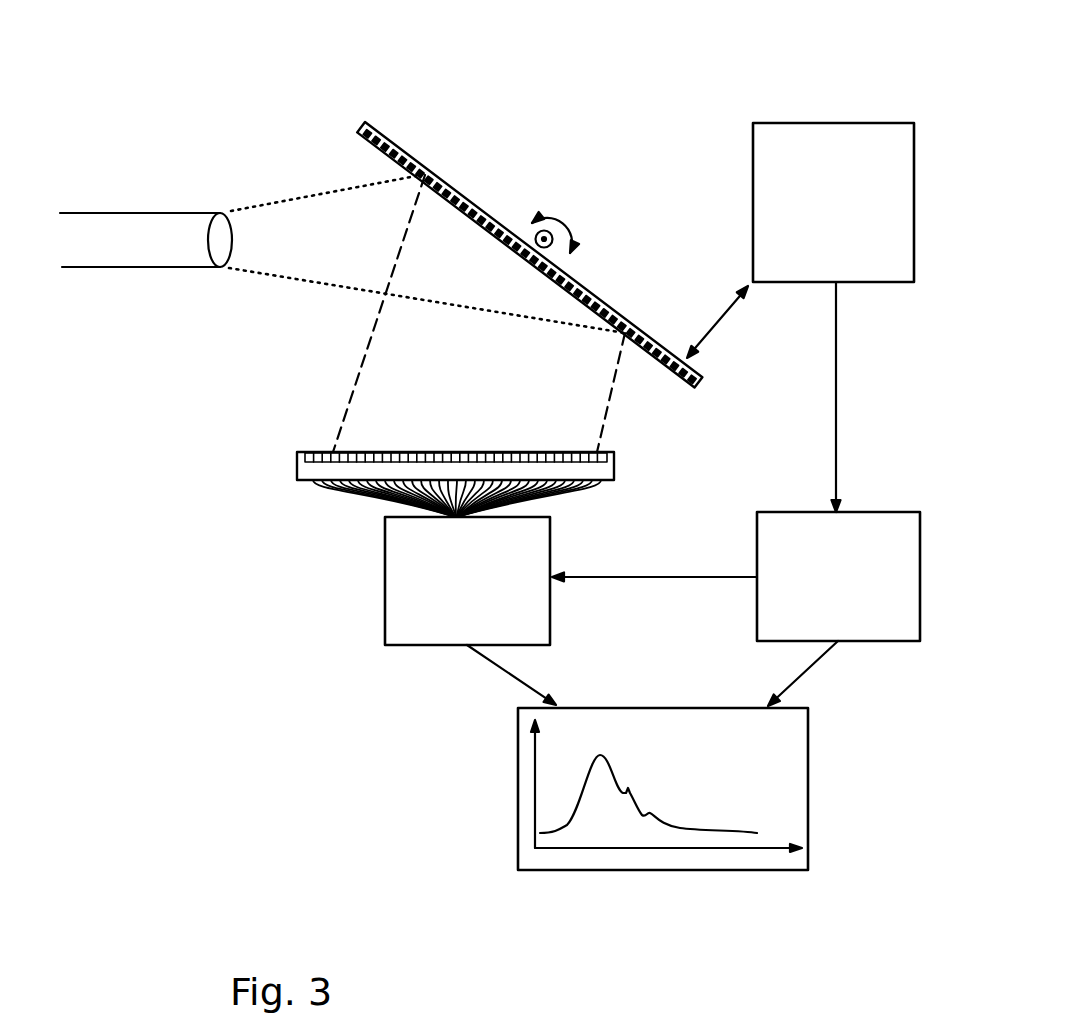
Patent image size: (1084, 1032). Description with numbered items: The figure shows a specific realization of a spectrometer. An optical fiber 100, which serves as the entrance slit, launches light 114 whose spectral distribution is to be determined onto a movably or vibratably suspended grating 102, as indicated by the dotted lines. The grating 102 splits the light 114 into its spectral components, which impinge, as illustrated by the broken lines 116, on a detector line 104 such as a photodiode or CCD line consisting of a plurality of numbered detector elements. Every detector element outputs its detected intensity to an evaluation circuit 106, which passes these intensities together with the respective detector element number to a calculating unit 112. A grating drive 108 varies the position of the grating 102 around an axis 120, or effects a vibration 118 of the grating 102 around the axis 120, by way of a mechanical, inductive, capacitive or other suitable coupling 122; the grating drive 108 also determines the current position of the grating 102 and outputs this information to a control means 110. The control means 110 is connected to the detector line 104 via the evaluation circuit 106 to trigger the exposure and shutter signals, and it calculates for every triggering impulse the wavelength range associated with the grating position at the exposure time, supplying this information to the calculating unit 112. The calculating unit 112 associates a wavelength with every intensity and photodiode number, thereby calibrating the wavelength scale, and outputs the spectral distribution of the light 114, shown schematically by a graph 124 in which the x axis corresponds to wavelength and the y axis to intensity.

The optical fiber 100 is at (121, 212).
The grating 102 is at (392, 127).
The detector line 104 is at (297, 457).
The evaluation circuit 106 is at (385, 580).
The grating drive 108 is at (753, 160).
The control means 110 is at (867, 512).
The calculating unit 112 is at (662, 789).
The light 114 is at (303, 196).
The broken lines 116 is at (364, 355).
The vibration 118 is at (537, 222).
The axis 120 is at (566, 262).
The coupling 122 is at (718, 312).
The graph 124 is at (752, 798).